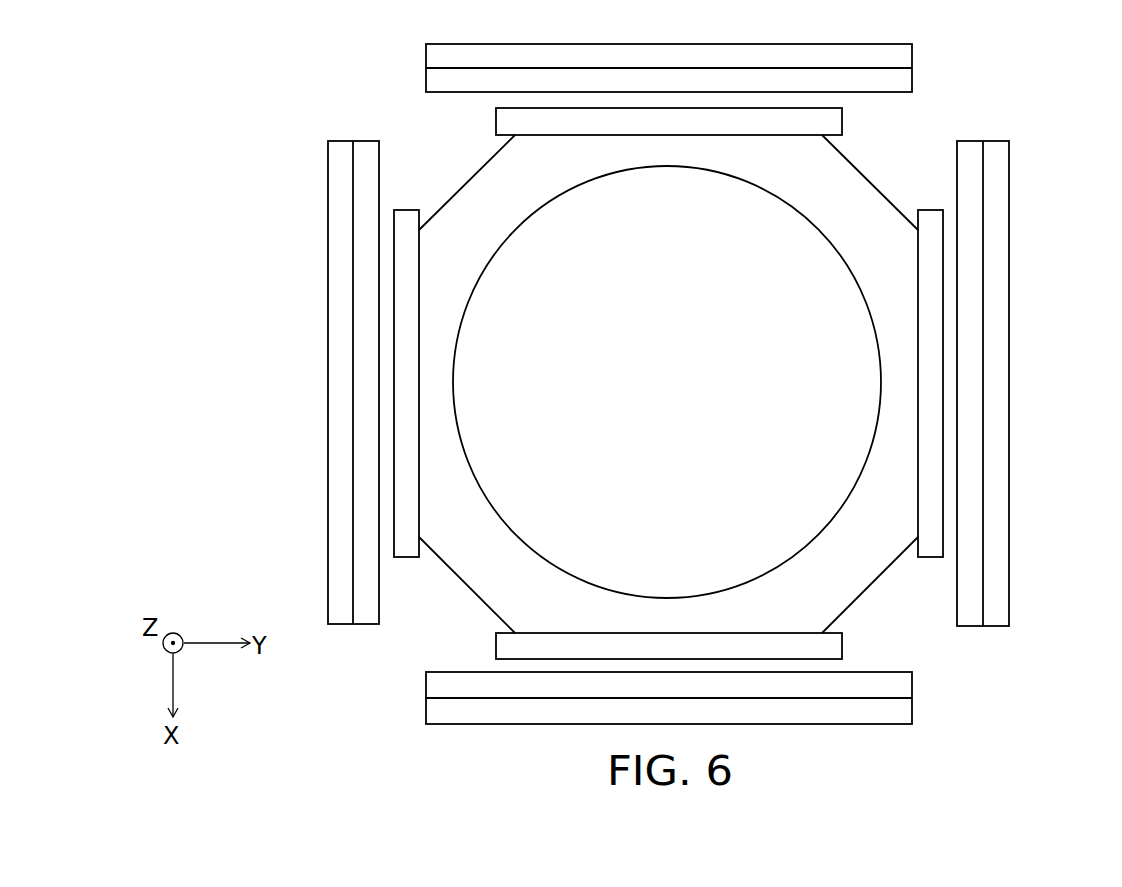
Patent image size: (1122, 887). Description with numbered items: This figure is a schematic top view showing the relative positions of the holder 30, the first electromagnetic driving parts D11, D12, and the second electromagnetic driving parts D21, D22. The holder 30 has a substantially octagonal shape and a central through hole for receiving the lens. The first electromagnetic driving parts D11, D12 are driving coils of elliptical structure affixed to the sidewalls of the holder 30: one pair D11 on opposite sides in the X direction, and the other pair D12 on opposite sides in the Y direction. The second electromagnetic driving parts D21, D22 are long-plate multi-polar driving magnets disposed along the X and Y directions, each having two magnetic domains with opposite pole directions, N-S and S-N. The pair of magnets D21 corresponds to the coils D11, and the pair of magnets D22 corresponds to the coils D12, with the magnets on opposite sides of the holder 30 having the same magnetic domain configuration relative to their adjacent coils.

The second electromagnetic driving part D21 is at (424, 68).
The first electromagnetic driving part D11 is at (494, 121).
The first electromagnetic driving part D12 is at (408, 207).
The second electromagnetic driving part D22 is at (326, 307).
The holder 30 is at (848, 205).